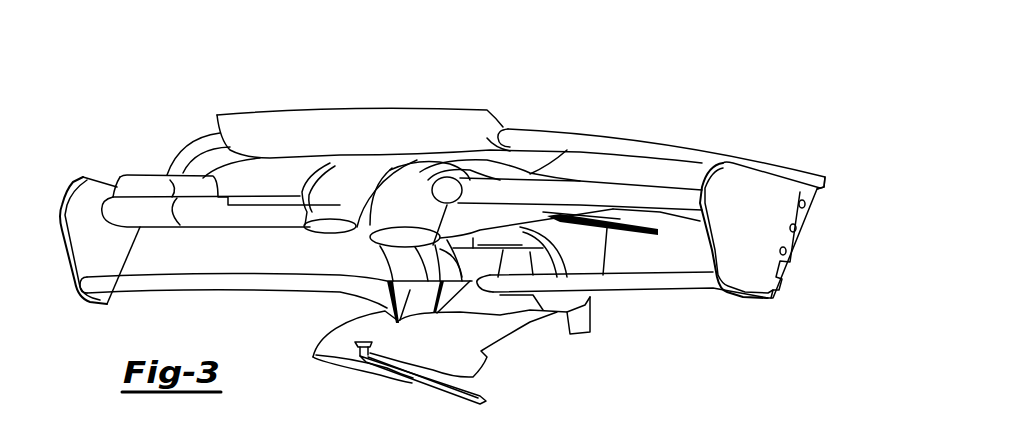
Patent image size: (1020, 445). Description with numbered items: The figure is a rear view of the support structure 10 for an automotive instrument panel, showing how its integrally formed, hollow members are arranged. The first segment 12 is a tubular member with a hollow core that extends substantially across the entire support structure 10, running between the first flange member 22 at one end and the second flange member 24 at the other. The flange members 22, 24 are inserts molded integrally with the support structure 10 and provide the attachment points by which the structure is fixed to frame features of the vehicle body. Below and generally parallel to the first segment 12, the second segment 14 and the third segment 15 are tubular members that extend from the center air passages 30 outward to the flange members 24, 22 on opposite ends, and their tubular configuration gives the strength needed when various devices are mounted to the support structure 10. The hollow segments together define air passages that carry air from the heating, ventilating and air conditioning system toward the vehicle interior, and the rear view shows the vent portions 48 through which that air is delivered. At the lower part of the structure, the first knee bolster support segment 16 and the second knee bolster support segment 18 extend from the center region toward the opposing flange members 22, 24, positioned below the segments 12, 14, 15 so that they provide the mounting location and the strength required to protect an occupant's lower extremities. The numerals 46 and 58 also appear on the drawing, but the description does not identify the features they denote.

The support structure 10 is at (317, 85).
The top cover 46 is at (374, 99).
The third segment 15 is at (188, 148).
The first segment 12 is at (548, 133).
The second segment 14 is at (598, 187).
The second flange member 24 is at (755, 192).
The vane 58 is at (638, 232).
The first flange member 22 is at (83, 237).
The first knee bolster support segment 16 is at (207, 280).
The center air passages 30 is at (397, 218).
The vent portions 48 is at (413, 370).
The second knee bolster support segment 18 is at (618, 286).